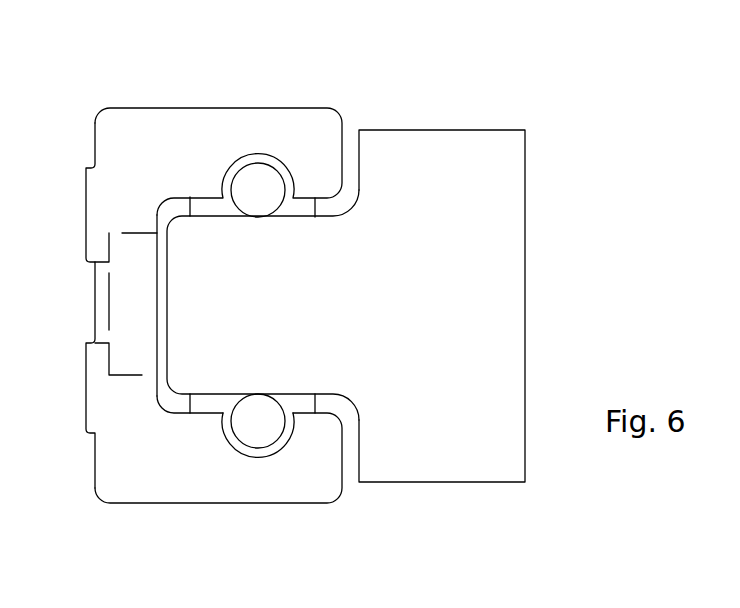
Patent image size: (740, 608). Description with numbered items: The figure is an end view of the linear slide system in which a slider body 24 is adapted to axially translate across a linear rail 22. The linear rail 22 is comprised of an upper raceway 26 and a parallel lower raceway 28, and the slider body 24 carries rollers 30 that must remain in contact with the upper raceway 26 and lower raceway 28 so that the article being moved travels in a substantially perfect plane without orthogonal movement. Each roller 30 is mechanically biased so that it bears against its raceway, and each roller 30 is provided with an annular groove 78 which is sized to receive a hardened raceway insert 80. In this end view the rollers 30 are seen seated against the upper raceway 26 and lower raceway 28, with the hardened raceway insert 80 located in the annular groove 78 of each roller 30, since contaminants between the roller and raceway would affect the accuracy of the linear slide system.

The linear rail 22 is at (115, 156).
The slider body 24 is at (482, 281).
The upper raceway 26 is at (215, 120).
The lower raceway 28 is at (312, 477).
The roller 30 is at (297, 208).
The annular groove 78 is at (242, 456).
The hardened raceway insert 80 is at (263, 200).